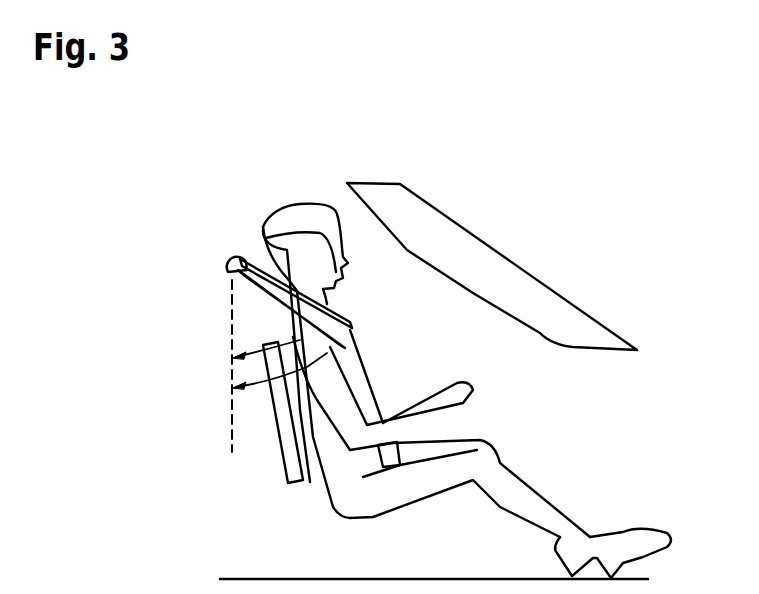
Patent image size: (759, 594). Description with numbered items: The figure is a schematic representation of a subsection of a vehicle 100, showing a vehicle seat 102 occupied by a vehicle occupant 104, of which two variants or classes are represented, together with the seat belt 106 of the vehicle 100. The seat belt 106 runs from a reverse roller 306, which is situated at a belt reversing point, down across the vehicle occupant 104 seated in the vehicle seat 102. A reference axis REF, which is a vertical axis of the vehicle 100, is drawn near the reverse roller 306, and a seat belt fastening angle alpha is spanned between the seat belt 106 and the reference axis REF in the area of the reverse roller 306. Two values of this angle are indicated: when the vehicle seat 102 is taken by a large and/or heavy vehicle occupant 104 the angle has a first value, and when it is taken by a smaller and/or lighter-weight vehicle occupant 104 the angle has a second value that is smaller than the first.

The vehicle 100 is at (585, 160).
The vehicle seat 102 is at (287, 478).
The vehicle occupant 104 is at (252, 261).
The seat belt 106 is at (253, 260).
The reverse roller 306 is at (226, 265).
The reference axis REF is at (232, 403).